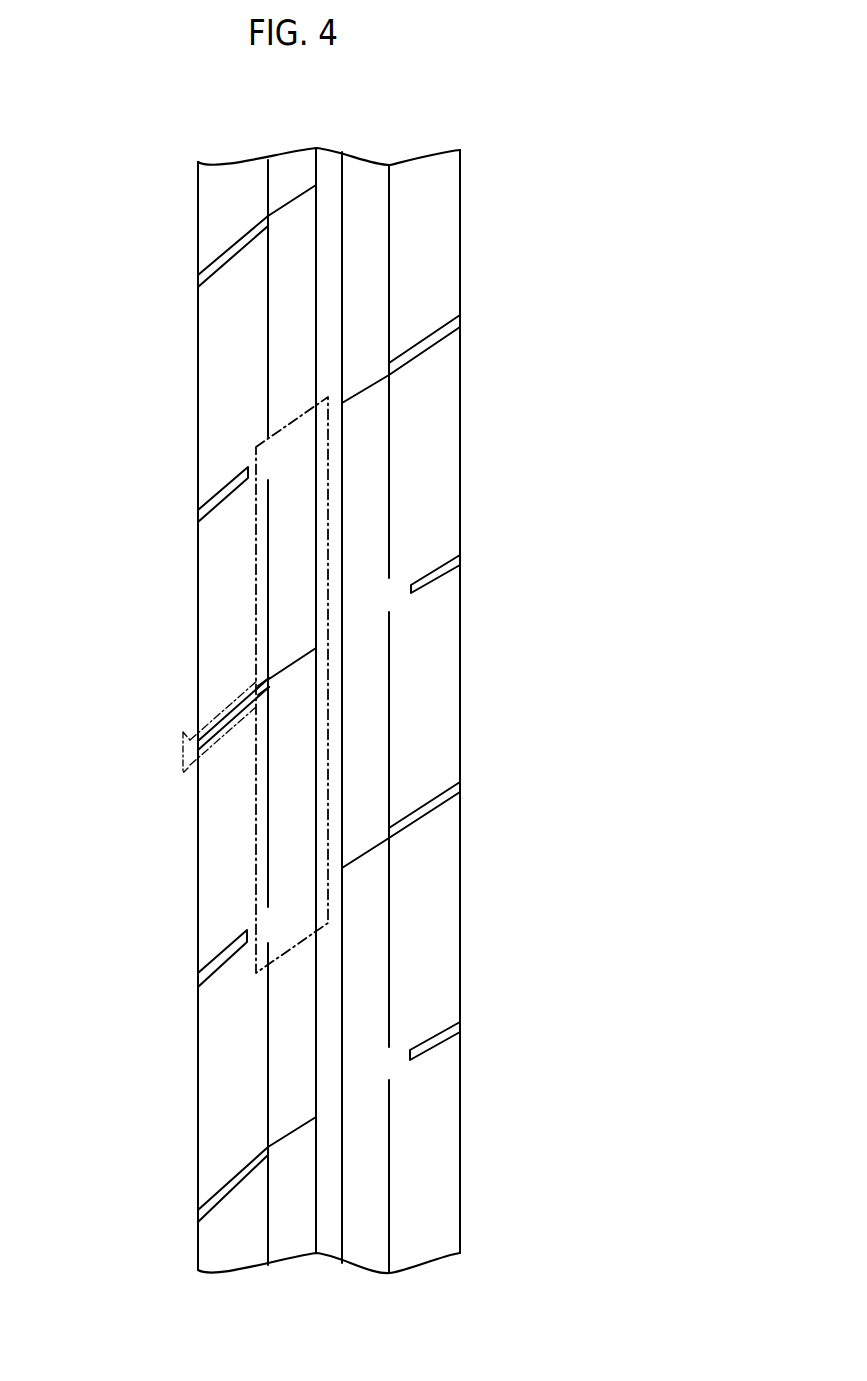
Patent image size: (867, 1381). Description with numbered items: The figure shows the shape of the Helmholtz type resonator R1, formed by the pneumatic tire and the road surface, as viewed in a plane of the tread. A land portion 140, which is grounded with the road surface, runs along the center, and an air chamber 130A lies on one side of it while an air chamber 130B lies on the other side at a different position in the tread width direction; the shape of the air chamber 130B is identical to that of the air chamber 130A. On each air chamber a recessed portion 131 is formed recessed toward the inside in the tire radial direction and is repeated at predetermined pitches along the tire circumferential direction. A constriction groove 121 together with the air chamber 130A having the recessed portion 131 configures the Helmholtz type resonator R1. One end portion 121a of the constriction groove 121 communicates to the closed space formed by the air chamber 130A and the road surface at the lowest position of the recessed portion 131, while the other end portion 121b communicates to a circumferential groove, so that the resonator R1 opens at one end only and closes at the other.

The air chamber 130B is at (290, 182).
The air chamber 130A is at (365, 182).
The Helmholtz type resonator R1 is at (328, 497).
The constriction groove 121 is at (228, 708).
The end portion 121a is at (262, 675).
The end portion 121b is at (183, 764).
The recessed portion 131 is at (293, 687).
The land portion 140 is at (316, 1240).